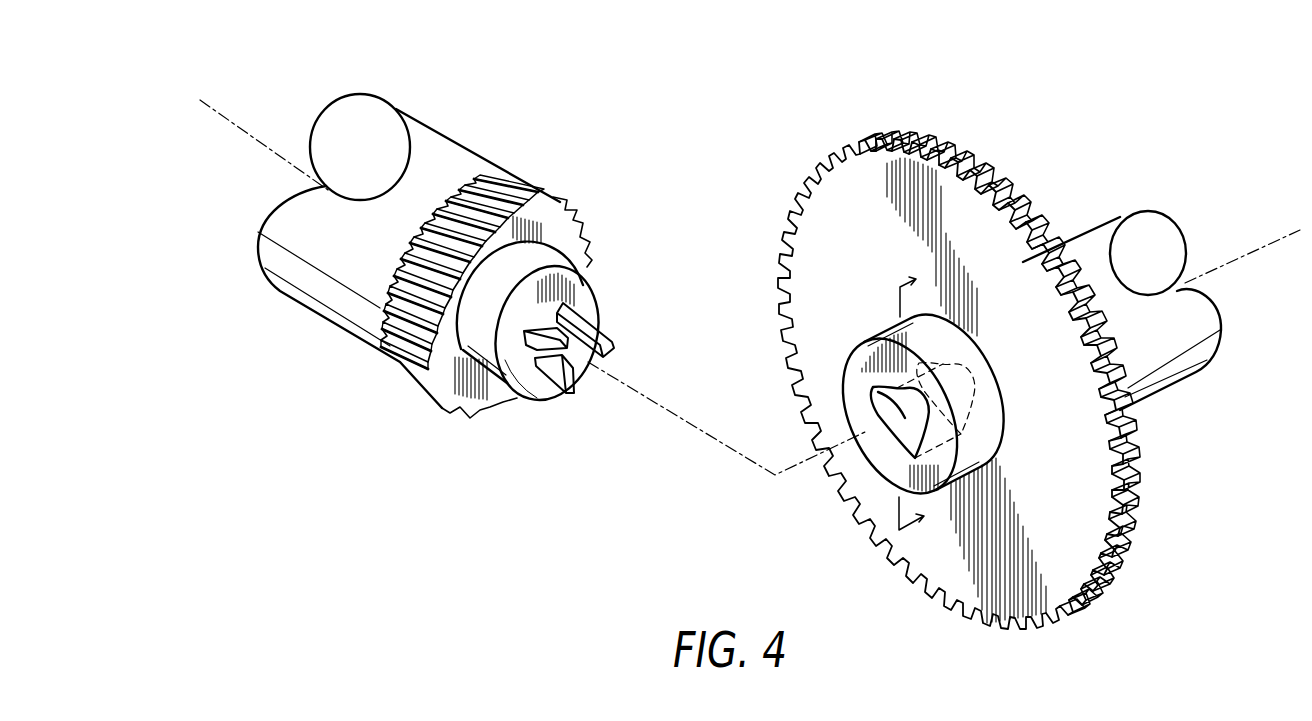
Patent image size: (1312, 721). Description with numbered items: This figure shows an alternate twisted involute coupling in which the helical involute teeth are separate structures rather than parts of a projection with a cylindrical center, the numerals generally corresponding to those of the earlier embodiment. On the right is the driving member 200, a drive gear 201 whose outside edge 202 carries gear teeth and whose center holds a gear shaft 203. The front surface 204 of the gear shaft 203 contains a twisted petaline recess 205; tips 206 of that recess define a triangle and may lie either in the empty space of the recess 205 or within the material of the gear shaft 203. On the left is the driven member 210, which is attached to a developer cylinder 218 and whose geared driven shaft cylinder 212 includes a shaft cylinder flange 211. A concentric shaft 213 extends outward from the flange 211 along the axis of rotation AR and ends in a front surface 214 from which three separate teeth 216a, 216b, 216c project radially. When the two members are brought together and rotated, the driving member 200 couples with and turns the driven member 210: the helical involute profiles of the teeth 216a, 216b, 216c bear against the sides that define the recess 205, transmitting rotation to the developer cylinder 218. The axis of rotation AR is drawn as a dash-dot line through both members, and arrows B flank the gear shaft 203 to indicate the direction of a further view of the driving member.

The driving member 200 is at (1084, 212).
The worm wheel gear 201 is at (1033, 603).
The gear teeth 202 is at (1018, 192).
The gear shaft 203 is at (893, 332).
The hub bore surface 204 is at (858, 380).
The petaline recess 205 is at (912, 443).
The tips 206 is at (878, 403).
The driven member 210 is at (593, 168).
The worm gear teeth 211 is at (538, 226).
The worm gear 212 is at (400, 363).
The worm gear hub 213 is at (552, 265).
The end face 214 is at (521, 378).
The helical involute tooth 216a is at (573, 340).
The helical involute tooth 216b is at (564, 357).
The helical involute tooth 216c is at (607, 351).
The developer cylinder 218 is at (434, 130).
The axis of rotation AR is at (750, 275).
The section line B is at (917, 398).